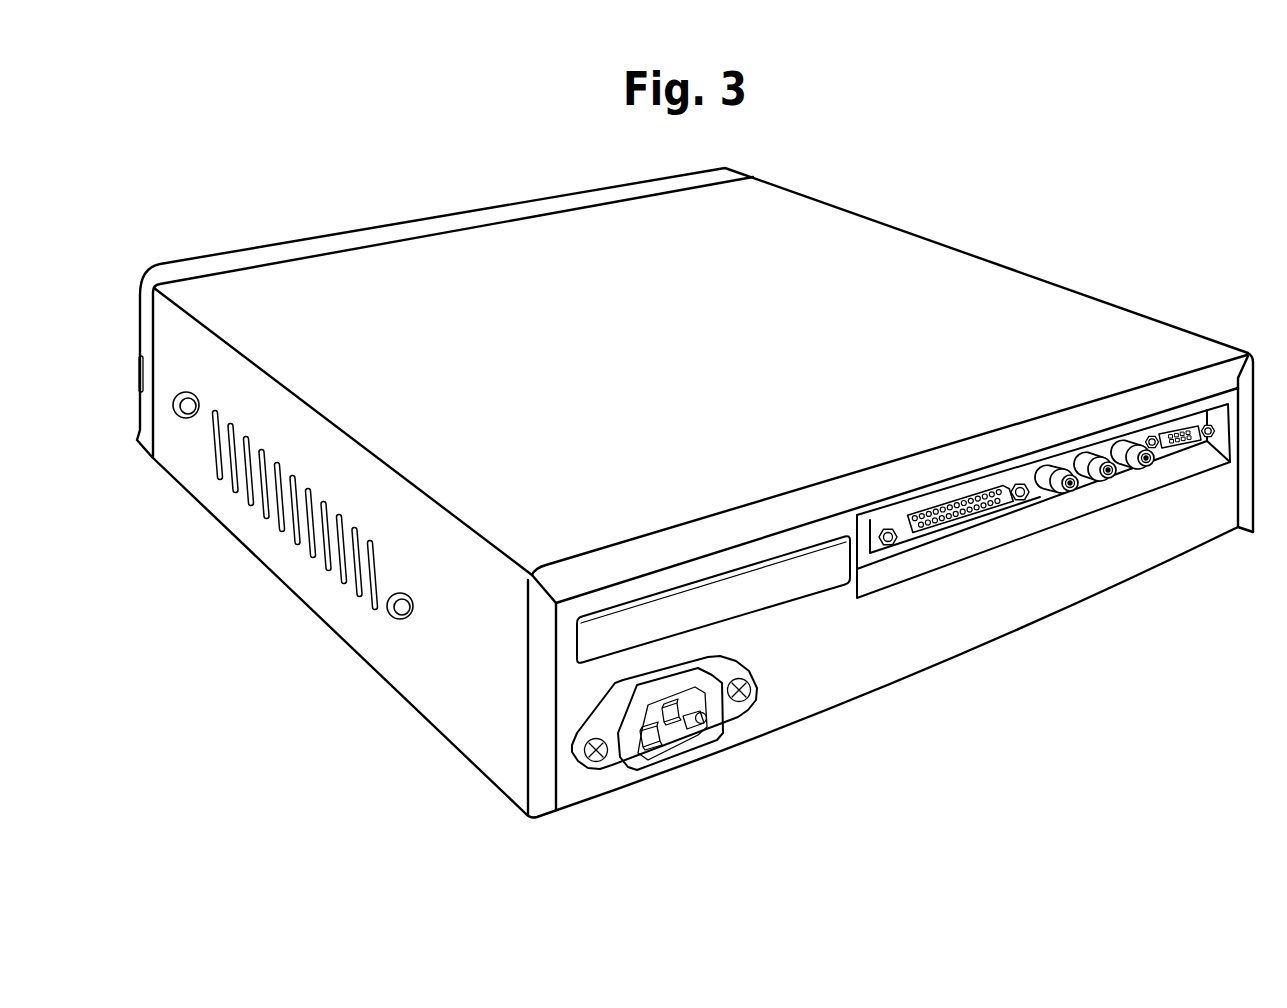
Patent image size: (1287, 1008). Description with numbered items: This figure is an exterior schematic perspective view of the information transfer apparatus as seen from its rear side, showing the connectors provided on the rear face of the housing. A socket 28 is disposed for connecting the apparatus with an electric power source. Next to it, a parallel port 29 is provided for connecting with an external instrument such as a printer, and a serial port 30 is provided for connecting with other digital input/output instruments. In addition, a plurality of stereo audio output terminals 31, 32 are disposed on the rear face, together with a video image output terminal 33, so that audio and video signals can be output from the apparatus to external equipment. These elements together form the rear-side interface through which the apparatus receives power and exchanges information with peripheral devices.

The socket 28 is at (677, 758).
The parallel port 29 is at (955, 534).
The serial port 30 is at (1209, 446).
The stereo audio output terminal 31 is at (1066, 495).
The stereo audio output terminal 32 is at (1110, 482).
The video image output terminal 33 is at (1150, 470).